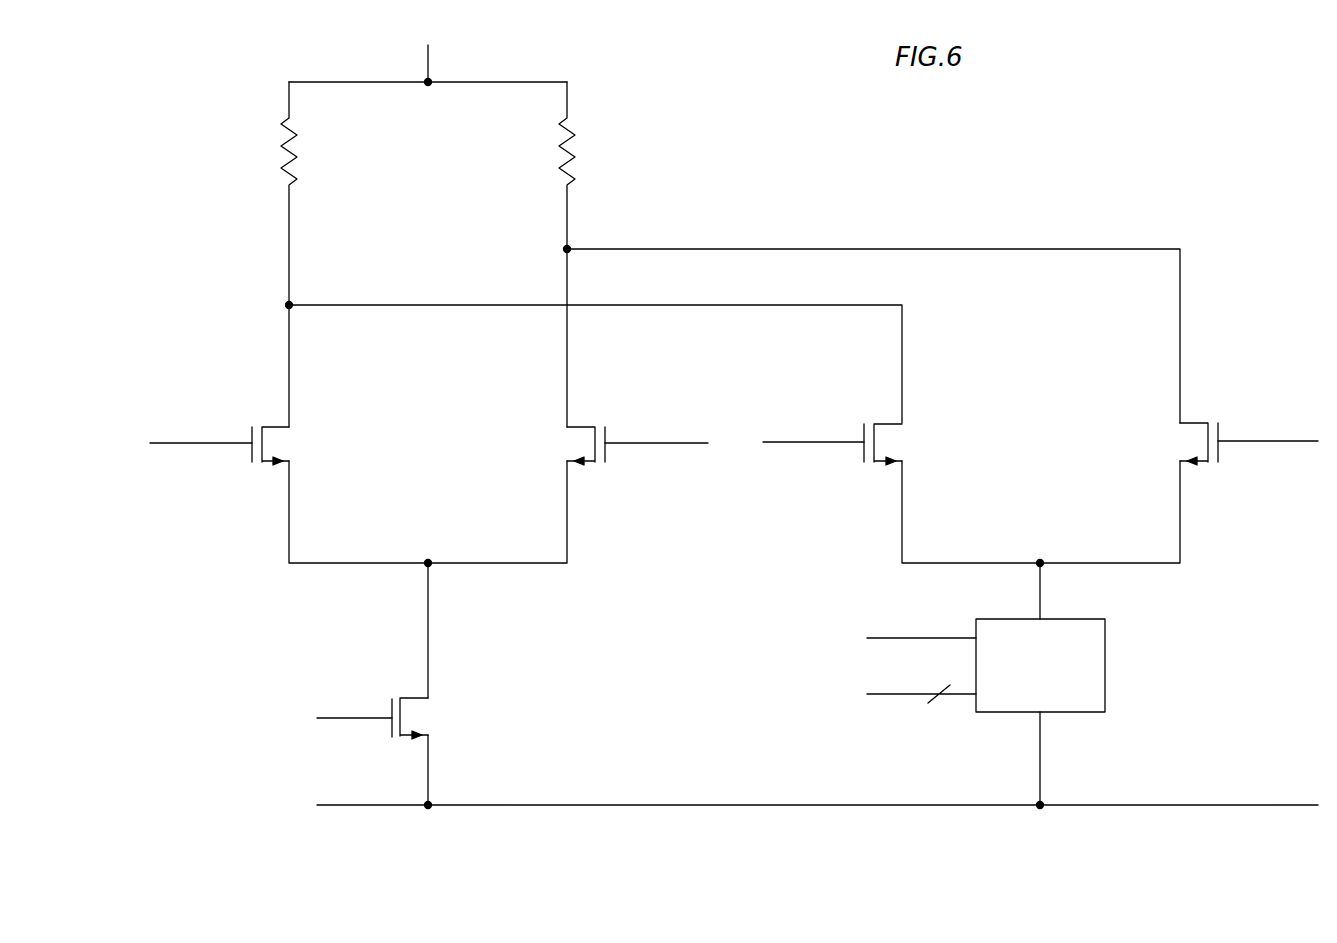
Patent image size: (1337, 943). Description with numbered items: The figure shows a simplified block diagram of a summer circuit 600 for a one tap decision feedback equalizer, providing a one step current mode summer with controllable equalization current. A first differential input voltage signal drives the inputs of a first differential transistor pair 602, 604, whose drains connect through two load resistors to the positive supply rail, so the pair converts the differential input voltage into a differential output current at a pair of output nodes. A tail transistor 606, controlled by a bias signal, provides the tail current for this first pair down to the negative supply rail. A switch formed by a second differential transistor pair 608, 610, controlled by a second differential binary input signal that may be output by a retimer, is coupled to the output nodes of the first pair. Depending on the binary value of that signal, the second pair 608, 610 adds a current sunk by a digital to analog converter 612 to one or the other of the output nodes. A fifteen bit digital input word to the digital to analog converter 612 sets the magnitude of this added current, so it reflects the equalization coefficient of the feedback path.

The summer circuit 600 is at (900, 151).
The first differential transistor pair transistor 602 is at (292, 438).
The first differential transistor pair transistor 604 is at (562, 450).
The transistor 606 is at (428, 718).
The switch differential transistor pair transistor 608 is at (905, 438).
The switch differential transistor pair transistor 610 is at (1175, 450).
The digital to analog converter 612 is at (1105, 665).